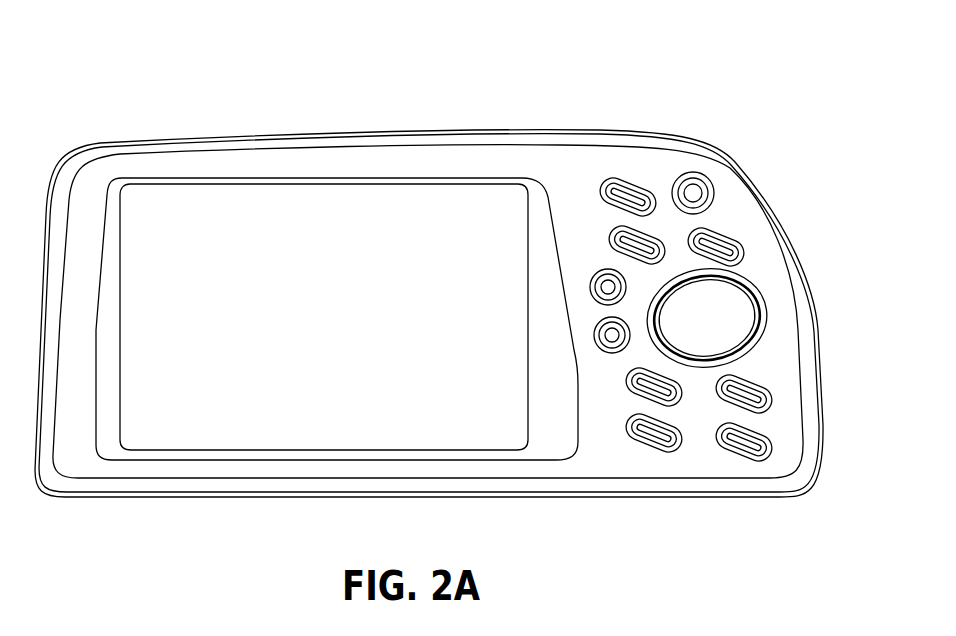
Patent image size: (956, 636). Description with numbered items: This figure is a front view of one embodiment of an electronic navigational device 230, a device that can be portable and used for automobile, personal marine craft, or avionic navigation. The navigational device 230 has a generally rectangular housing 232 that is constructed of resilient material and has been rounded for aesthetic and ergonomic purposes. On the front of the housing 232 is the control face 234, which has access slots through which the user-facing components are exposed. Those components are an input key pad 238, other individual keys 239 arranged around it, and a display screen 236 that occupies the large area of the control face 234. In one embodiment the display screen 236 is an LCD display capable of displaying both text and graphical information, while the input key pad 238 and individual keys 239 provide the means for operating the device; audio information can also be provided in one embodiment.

The electronic navigational device 230 is at (636, 84).
The housing 232 is at (281, 134).
The control face 234 is at (399, 162).
The display screen 236 is at (207, 437).
The input key pad 238 is at (742, 325).
The individual keys 239 is at (720, 247).